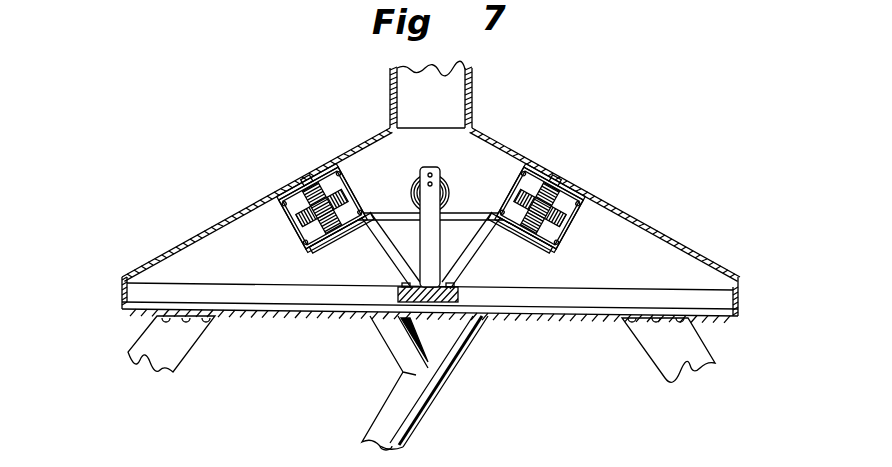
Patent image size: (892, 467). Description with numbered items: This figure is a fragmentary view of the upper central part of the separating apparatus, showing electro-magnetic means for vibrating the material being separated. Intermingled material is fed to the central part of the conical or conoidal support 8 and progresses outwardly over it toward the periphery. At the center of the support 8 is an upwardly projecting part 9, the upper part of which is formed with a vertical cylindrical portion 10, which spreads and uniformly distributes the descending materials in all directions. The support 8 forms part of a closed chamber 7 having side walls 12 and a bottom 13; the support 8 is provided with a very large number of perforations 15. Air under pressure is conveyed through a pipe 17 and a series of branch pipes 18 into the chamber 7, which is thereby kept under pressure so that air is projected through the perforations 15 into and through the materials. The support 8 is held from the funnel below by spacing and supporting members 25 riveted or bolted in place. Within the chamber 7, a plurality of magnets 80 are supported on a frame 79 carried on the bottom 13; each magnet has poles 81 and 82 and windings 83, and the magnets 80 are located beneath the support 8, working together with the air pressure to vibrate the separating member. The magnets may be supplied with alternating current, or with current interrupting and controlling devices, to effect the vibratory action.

The closed chamber 7 is at (207, 260).
The conical or conoidal support 8 is at (162, 248).
The part projecting upwardly 9 is at (391, 82).
The vertical cylindrical portion 10 is at (447, 88).
The side walls 12 is at (121, 283).
The bottom 13 is at (580, 314).
The perforations 15 is at (272, 194).
The pipe 17 is at (410, 416).
The branch pipes 18 is at (389, 341).
The spacing and supporting members 25 is at (175, 344).
The frame 79 is at (420, 263).
The magnets 80 is at (300, 230).
The pole 81 is at (285, 190).
The pole 82 is at (340, 163).
The windings 83 is at (305, 238).